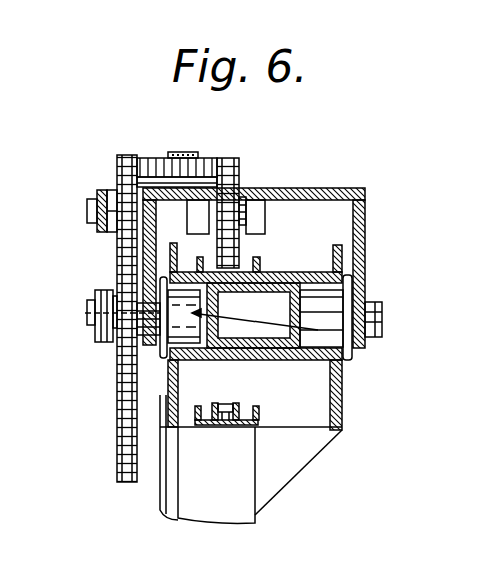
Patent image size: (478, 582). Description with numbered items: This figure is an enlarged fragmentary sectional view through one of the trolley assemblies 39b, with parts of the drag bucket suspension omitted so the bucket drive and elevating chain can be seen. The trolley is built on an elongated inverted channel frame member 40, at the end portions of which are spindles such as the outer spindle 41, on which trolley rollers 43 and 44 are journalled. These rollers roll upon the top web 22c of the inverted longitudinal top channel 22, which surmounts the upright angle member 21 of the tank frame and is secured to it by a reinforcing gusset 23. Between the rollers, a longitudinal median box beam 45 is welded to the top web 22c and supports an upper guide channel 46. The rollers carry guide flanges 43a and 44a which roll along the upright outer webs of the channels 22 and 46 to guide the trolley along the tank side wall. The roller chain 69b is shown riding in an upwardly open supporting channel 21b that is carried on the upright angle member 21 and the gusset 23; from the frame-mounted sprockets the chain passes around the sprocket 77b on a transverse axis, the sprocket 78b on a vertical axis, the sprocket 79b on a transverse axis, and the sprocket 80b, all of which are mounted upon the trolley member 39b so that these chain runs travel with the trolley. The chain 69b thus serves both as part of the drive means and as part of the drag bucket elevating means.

The upright angle member 21 is at (217, 510).
The upwardly open supporting channel 21b is at (255, 415).
The inverted longitudinal top channel 22 is at (343, 422).
The top web 22c is at (262, 356).
The reinforcing gusset 23 is at (277, 492).
The trolley assembly 39b is at (343, 175).
The inverted channel frame member 40 is at (366, 212).
The outer spindle 41 is at (373, 302).
The trolley roller 43 is at (255, 318).
The guide flange 43a is at (352, 353).
The trolley roller 44 is at (253, 315).
The guide flange 44a is at (135, 354).
The longitudinal median box beam 45 is at (255, 350).
The upper guide channel 46 is at (268, 270).
The roller chain 69b is at (125, 443).
The sprocket 77b is at (228, 168).
The sprocket 78b is at (150, 165).
The sprocket 79b is at (127, 156).
The sprocket 80b is at (120, 340).